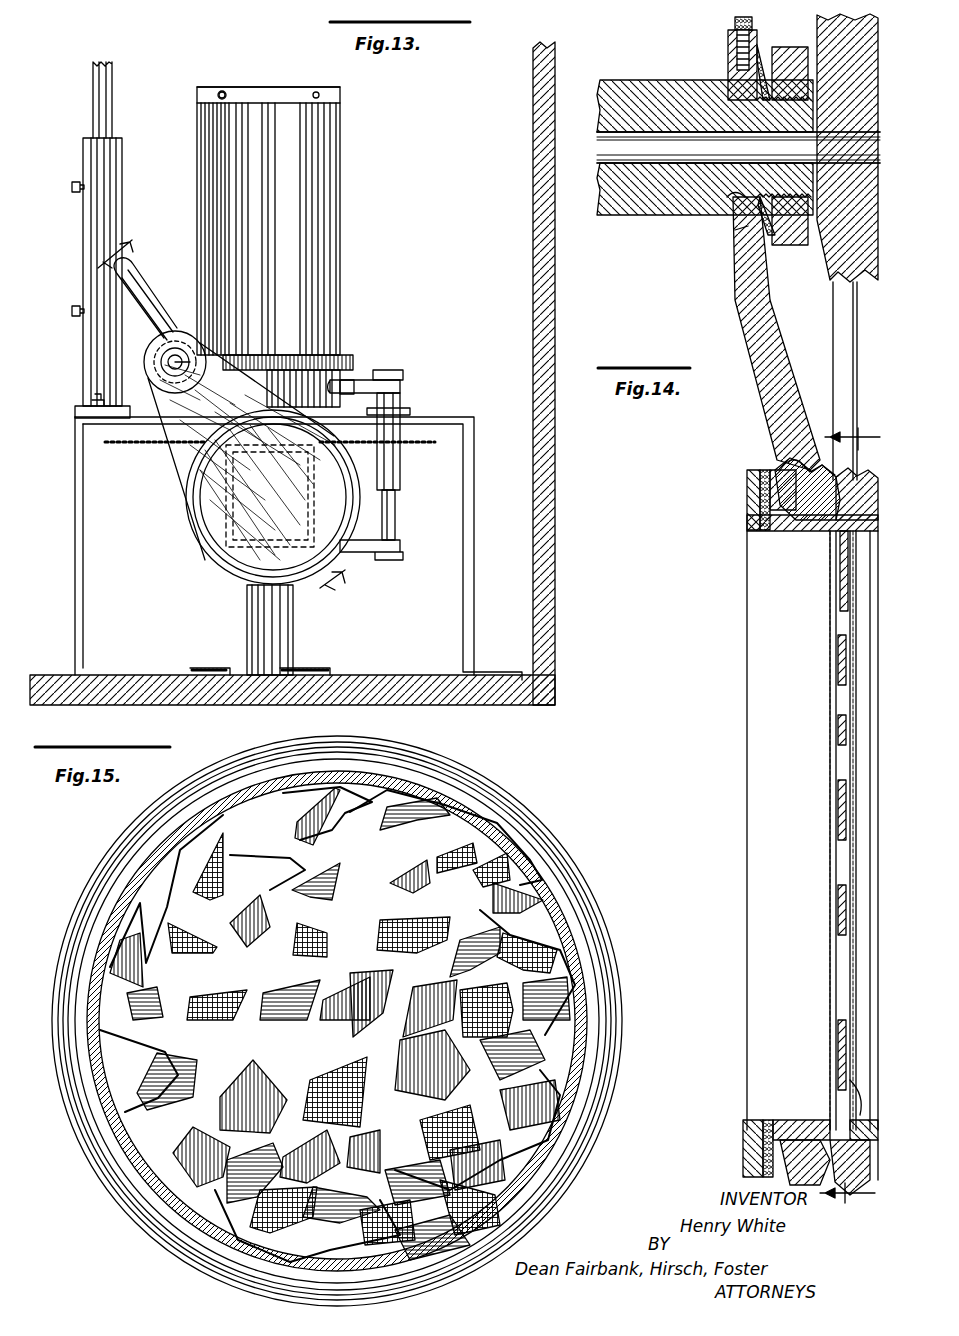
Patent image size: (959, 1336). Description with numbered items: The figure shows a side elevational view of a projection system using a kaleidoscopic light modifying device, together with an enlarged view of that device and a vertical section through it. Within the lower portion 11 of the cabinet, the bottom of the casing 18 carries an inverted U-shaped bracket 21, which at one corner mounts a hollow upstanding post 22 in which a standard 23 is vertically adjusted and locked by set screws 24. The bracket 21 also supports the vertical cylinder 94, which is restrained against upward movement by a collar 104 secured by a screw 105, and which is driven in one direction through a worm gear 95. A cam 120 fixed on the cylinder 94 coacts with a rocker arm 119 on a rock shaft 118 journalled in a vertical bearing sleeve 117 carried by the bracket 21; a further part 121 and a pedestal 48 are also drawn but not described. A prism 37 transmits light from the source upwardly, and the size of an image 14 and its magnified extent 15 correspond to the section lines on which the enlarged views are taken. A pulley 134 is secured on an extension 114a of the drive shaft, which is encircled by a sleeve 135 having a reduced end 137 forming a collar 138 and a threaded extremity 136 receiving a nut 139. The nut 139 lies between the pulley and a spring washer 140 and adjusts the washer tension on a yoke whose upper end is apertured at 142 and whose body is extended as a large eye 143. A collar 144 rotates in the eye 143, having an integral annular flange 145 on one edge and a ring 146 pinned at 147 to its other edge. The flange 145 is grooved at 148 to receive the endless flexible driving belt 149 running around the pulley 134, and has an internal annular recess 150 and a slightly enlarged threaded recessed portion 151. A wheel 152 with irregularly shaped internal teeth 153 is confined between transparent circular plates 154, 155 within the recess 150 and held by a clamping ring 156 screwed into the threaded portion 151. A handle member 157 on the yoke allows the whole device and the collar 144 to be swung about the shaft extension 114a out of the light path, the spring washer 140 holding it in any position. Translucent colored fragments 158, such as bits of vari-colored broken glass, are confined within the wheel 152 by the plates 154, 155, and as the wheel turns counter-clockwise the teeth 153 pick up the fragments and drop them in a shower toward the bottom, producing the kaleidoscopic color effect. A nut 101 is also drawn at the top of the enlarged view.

In FIG. 13, the lower portion 11 is at (555, 533).
In FIG. 13, the size of an image 14 is at (225, 428).
In FIG. 14, the extent of magnification 15 is at (851, 809).
In FIG. 13, the bottom of the casing 18 is at (395, 680).
In FIG. 13, the inverted U-shaped bracket 21 is at (75, 555).
In FIG. 13, the hollow upstanding post 22 is at (110, 167).
In FIG. 13, the standard 23 is at (93, 92).
In FIG. 13, the set screws 24 is at (72, 186).
In FIG. 13, the prism 37 is at (300, 490).
In FIG. 13, the pedestal 48 is at (247, 632).
In FIG. 13, the vertical cylinder 94 is at (323, 195).
In FIG. 13, the worm gear 95 is at (354, 367).
In FIG. 14, the nut 101 is at (728, 50).
In FIG. 13, the collar 104 is at (248, 66).
In FIG. 13, the screw 105 is at (226, 95).
In FIG. 13, the extension of the shaft 114a is at (178, 356).
In FIG. 14, the extension of the shaft 114a is at (630, 160).
In FIG. 13, the vertical bearing sleeve 117 is at (400, 476).
In FIG. 13, the rock shaft 118 is at (395, 512).
In FIG. 13, the rocker arm 119 is at (360, 378).
In FIG. 13, the cam 120 is at (286, 342).
In FIG. 13, the lower bracket 121 is at (365, 552).
In FIG. 13, the pulley 134 is at (178, 360).
In FIG. 14, the pulley 134 is at (815, 270).
In FIG. 14, the sleeve 135 is at (640, 75).
In FIG. 14, the threaded extremity 136 is at (790, 47).
In FIG. 14, the reduced end 137 is at (733, 215).
In FIG. 14, the collar 138 is at (757, 215).
In FIG. 14, the nut 139 is at (787, 240).
In FIG. 14, the spring washer 140 is at (738, 235).
In FIG. 14, the aperture 142 is at (740, 95).
In FIG. 14, the eye 143 is at (790, 531).
In FIG. 14, the collar 144 is at (815, 531).
In FIG. 14, the annular flange 145 is at (840, 490).
In FIG. 14, the ring 146 is at (760, 495).
In FIG. 14, the pin 147 is at (770, 510).
In FIG. 14, the groove 148 is at (790, 462).
In FIG. 15, the groove 148 is at (485, 752).
In FIG. 13, the endless flexible driving belt 149 is at (172, 470).
In FIG. 14, the endless flexible driving belt 149 is at (840, 332).
In FIG. 14, the internal annular recess 150 is at (842, 590).
In FIG. 13, the threaded recessed portion 151 is at (190, 515).
In FIG. 14, the threaded recessed portion 151 is at (747, 478).
In FIG. 14, the wheel 152 is at (832, 600).
In FIG. 15, the wheel 152 is at (600, 812).
In FIG. 14, the internal teeth 153 is at (850, 625).
In FIG. 15, the internal teeth 153 is at (530, 922).
In FIG. 14, the transparent circular plate 154 is at (838, 775).
In FIG. 14, the transparent circular plate 155 is at (844, 805).
In FIG. 14, the clamping ring 156 is at (840, 1095).
In FIG. 13, the handle member 157 is at (150, 315).
In FIG. 14, the handle member 157 is at (735, 23).
In FIG. 14, the translucent colored fragments 158 is at (838, 902).
In FIG. 15, the translucent colored fragments 158 is at (540, 960).